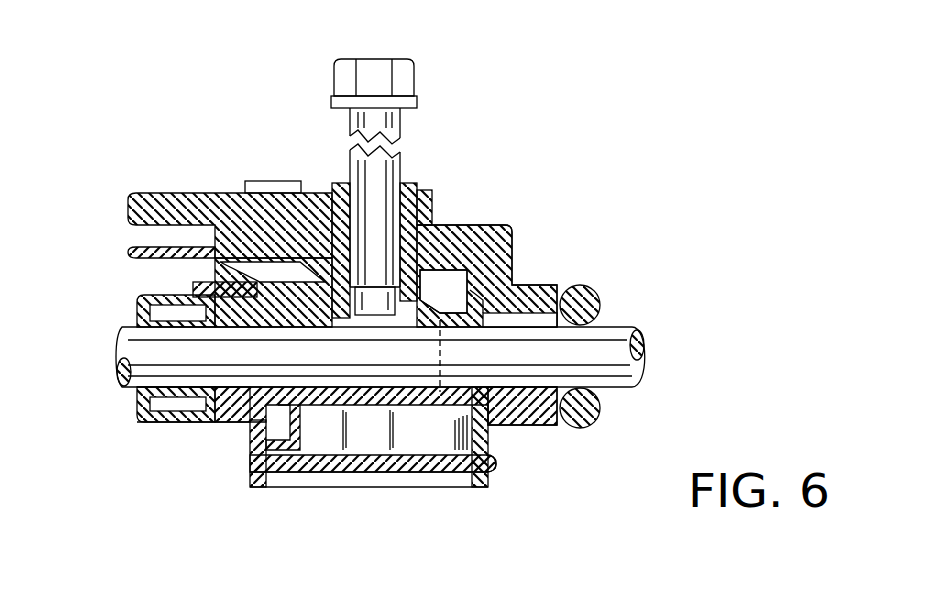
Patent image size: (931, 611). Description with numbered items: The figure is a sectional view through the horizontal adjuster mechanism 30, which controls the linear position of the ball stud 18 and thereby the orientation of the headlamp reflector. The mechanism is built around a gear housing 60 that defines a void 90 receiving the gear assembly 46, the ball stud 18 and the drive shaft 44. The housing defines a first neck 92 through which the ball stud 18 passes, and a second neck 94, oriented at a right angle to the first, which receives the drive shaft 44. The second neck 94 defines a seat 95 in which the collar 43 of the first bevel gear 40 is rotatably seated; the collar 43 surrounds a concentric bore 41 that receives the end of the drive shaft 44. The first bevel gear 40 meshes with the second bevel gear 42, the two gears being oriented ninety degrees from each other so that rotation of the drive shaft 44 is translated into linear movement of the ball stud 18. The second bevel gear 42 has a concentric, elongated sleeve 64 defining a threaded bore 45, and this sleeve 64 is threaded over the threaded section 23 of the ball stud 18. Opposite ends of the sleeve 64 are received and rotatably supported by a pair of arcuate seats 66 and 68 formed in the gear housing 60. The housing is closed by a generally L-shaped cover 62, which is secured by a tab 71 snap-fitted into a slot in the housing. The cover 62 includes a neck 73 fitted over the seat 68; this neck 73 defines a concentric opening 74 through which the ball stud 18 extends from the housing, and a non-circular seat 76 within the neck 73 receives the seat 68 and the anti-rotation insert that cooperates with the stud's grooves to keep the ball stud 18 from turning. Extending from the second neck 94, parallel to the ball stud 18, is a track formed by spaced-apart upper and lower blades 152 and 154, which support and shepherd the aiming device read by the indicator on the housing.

The adjuster mechanism 30 is at (730, 210).
The drive shaft 44 is at (405, 122).
The upper blade 152 is at (166, 193).
The lower blade 154 is at (124, 242).
The seat 95 is at (340, 183).
The second neck 94 is at (432, 200).
The first bevel gear 40 is at (453, 226).
The gear housing 60 is at (514, 230).
The arcuate seat 66 is at (490, 292).
The collar 43 is at (200, 275).
The concentric bore 41 is at (200, 300).
The concentric opening 74 is at (121, 345).
The ball stud 18 is at (622, 326).
The arcuate seat 68 is at (120, 383).
The non-circular seat 76 is at (135, 415).
The second bevel gear 42 is at (232, 424).
The neck 73 is at (166, 424).
The cover 62 is at (259, 491).
The threaded section 23 is at (316, 333).
The gear assembly 46 is at (357, 412).
The sleeve 64 is at (423, 406).
The tab 71 is at (492, 442).
The void 90 is at (490, 437).
The threaded bore 45 is at (530, 427).
The first neck 92 is at (560, 447).